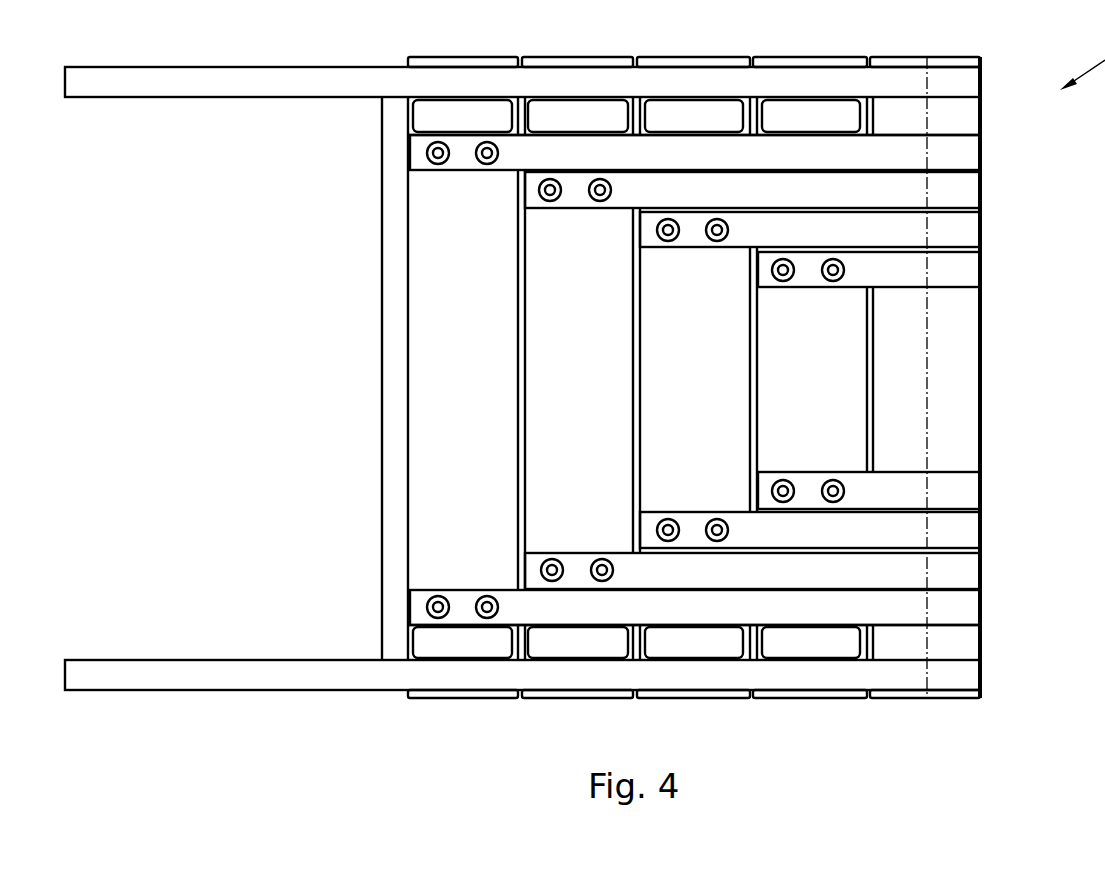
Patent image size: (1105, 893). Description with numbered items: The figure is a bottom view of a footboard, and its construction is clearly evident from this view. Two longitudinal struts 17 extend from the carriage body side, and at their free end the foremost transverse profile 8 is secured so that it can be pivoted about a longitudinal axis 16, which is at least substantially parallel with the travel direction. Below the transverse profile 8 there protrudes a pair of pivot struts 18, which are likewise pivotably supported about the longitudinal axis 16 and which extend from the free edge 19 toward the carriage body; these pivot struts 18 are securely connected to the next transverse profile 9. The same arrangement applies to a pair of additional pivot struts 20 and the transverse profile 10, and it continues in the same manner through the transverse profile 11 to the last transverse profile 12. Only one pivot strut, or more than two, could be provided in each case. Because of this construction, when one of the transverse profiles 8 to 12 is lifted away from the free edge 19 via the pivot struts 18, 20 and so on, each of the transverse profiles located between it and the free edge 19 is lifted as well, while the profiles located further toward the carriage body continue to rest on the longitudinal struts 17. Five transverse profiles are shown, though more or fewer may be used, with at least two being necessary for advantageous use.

The foremost transverse profile 8 is at (966, 380).
The transverse profile 9 is at (822, 380).
The transverse profile 10 is at (677, 380).
The transverse profile 11 is at (595, 380).
The last transverse profile 12 is at (444, 380).
The longitudinal axis 16 is at (927, 641).
The longitudinal struts 17 is at (222, 82).
The pivot struts 18 is at (945, 267).
The free edge 19 is at (980, 162).
The additional pivot struts 20 is at (945, 222).